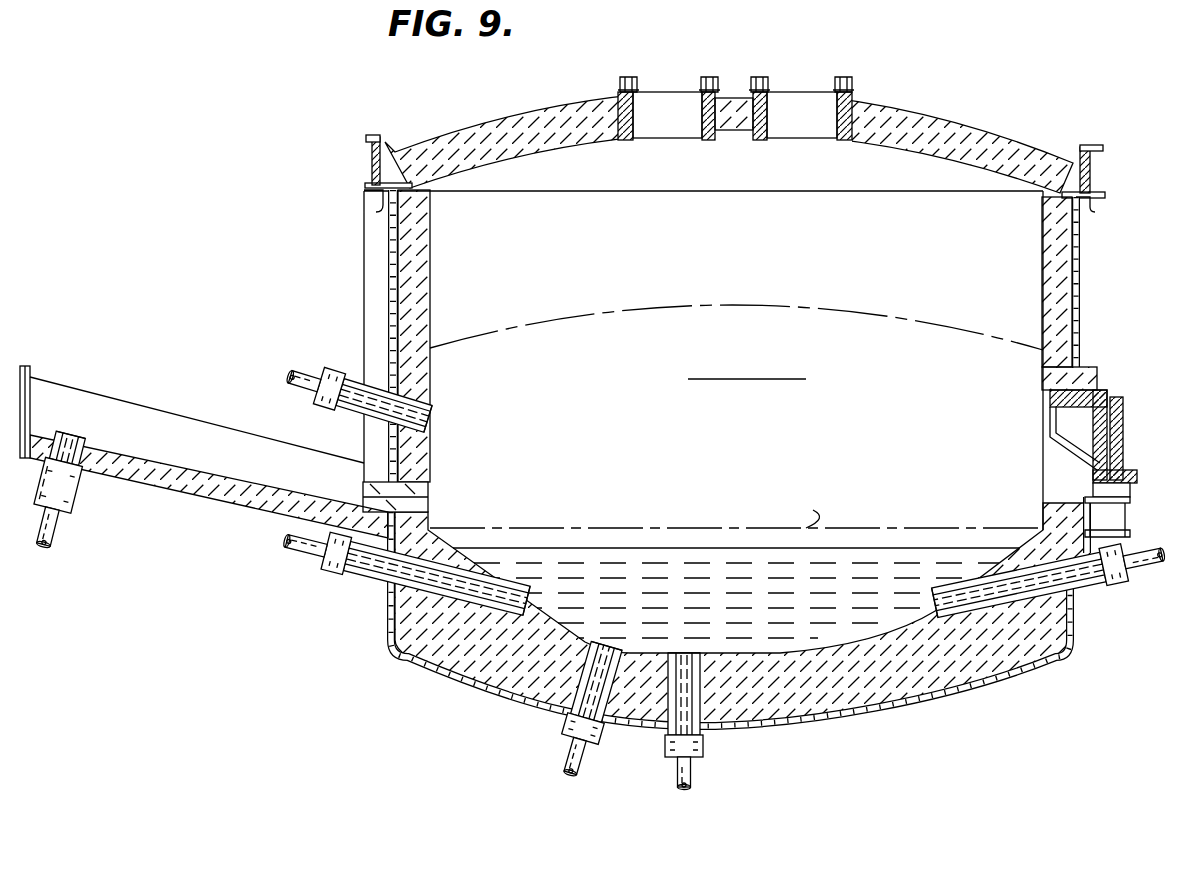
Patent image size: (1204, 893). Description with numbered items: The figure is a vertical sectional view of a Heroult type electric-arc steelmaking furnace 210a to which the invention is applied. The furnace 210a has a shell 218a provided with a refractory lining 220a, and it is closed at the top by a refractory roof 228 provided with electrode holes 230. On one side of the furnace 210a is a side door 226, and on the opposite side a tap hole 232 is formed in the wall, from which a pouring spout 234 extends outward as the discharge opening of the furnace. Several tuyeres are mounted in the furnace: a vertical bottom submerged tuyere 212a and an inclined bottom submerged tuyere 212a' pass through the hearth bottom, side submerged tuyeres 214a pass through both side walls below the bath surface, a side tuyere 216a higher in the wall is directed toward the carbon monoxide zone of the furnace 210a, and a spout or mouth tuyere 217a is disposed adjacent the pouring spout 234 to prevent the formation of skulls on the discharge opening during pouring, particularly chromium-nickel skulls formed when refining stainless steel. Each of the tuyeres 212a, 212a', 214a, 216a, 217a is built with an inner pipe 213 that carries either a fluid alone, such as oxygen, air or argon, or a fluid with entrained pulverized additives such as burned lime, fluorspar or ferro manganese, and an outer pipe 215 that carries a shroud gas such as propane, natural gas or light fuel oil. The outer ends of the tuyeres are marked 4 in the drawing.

The electric-arc steelmaking furnace 210a is at (1003, 133).
The refractory roof 228 is at (907, 118).
The electrode holes 230 is at (767, 107).
The shell 218a is at (1080, 261).
The refractory lining 220a is at (1060, 315).
The side door 226 is at (1117, 427).
The tap hole 232 is at (427, 508).
The pouring spout 234 is at (200, 428).
The side tuyere 216a is at (427, 403).
The side submerged tuyeres 214a is at (355, 573).
The vertical bottom submerged tuyere 212a is at (726, 721).
The inclined bottom submerged tuyere 212a' is at (545, 711).
The spout or mouth tuyere 217a is at (82, 490).
The inner pipe 213 is at (78, 442).
The outer pipe 215 is at (62, 441).
The lance inlet end (section 4) 4 is at (313, 376).